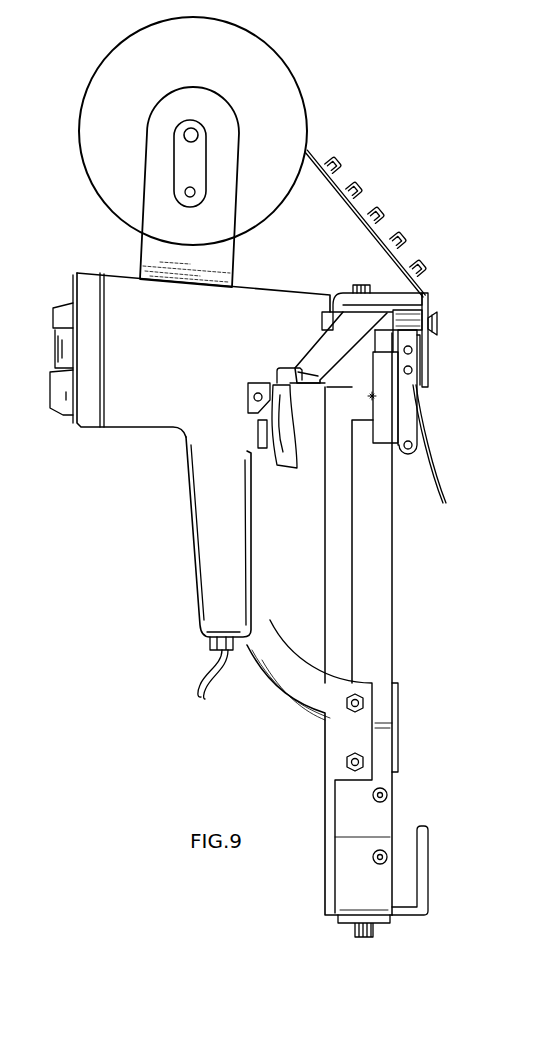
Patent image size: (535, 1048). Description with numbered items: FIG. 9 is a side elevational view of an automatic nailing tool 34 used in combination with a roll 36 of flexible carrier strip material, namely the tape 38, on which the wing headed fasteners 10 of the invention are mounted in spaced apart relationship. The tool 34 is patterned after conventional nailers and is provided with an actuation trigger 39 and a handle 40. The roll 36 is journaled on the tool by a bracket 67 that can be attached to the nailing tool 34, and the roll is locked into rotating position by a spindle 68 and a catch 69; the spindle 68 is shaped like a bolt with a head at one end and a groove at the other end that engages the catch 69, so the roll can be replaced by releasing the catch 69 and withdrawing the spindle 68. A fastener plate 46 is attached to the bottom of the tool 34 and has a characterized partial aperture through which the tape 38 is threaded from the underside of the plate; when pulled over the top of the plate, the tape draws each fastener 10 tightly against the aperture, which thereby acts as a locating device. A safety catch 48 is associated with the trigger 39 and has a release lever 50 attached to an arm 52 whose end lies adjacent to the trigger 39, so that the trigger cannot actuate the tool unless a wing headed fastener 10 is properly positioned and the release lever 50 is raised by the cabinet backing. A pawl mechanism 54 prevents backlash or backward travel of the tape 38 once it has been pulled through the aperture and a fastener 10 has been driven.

The wing headed fastener 10 is at (402, 247).
The automatic nailing tool 34 is at (216, 534).
The roll 36 is at (198, 63).
The tape 38 is at (358, 208).
The actuation trigger 39 is at (285, 466).
The handle 40 is at (242, 604).
The fastener plate 46 is at (425, 355).
The safety catch 48 is at (348, 327).
The release lever 50 is at (435, 317).
The arm 52 is at (310, 358).
The pawl mechanism 54 is at (418, 417).
The bracket 67 is at (197, 236).
The spindle 68 is at (205, 135).
The catch 69 is at (182, 155).